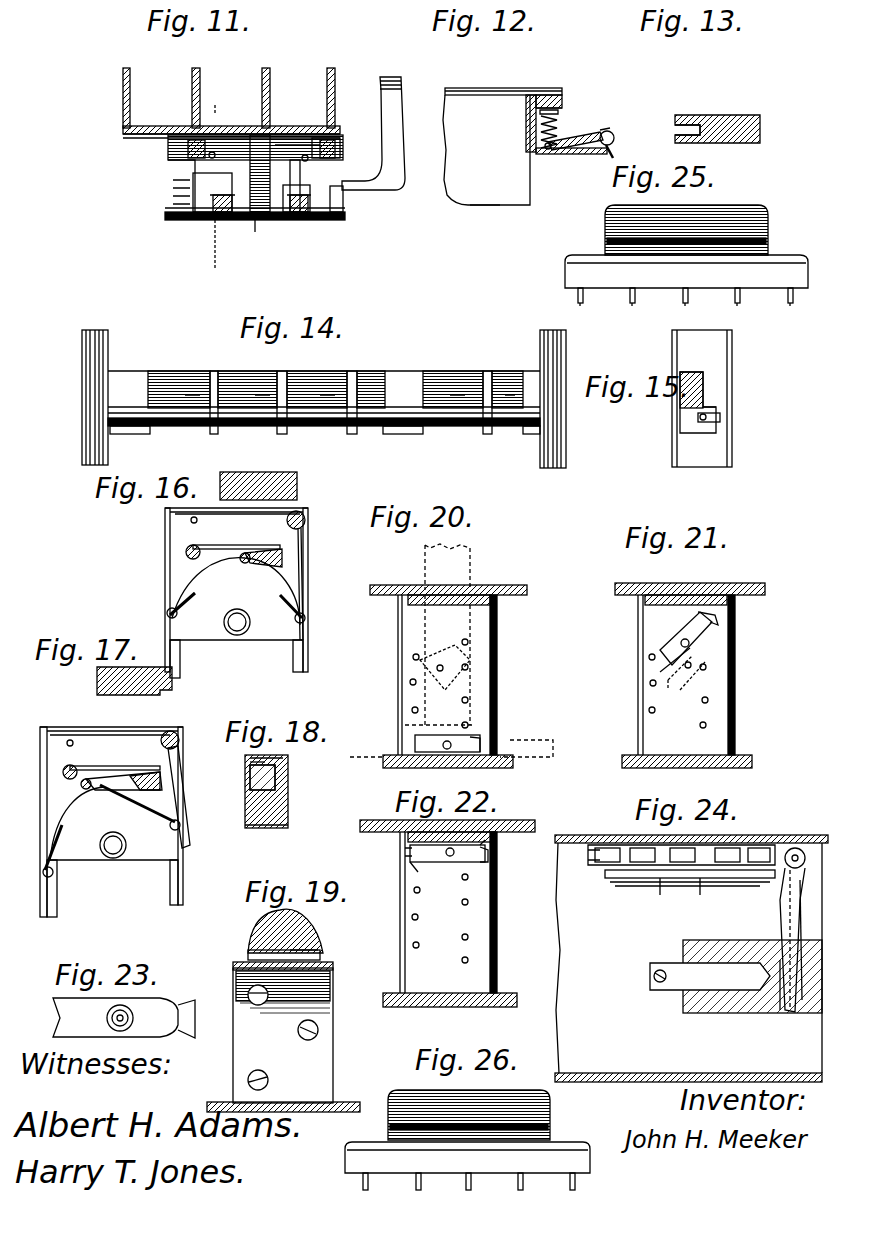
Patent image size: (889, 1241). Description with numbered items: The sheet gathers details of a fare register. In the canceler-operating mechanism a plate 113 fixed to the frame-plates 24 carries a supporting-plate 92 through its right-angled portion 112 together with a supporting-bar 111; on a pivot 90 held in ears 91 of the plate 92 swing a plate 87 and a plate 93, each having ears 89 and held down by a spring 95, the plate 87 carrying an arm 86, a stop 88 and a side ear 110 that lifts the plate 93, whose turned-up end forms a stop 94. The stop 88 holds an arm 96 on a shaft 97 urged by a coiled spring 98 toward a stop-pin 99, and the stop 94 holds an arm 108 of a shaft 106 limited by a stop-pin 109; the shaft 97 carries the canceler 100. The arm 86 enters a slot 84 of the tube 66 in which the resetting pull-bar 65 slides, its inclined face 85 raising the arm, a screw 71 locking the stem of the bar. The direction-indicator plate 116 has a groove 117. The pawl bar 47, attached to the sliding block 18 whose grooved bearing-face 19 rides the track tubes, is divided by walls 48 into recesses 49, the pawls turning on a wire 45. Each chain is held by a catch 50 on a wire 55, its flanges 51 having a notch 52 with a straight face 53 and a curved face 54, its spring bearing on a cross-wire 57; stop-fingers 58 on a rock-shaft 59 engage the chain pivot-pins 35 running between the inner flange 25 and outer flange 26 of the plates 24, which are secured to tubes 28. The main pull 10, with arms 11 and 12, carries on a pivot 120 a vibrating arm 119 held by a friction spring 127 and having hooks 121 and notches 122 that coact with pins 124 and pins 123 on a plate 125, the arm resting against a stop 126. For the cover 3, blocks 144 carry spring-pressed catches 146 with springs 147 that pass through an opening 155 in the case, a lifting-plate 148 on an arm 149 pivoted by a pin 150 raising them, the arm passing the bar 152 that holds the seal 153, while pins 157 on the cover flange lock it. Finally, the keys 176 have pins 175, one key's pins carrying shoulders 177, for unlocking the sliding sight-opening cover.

In FIG. 24, the cover 3 is at (745, 835).
In FIG. 16, the main pull 10 is at (255, 476).
In FIG. 17, the main pull 10 is at (97, 680).
In FIG. 20, the main pull 10 is at (540, 746).
In FIG. 20, the arm 11 is at (490, 592).
In FIG. 21, the arm 11 is at (708, 590).
In FIG. 22, the arm 11 is at (497, 846).
In FIG. 11, the arm 12 is at (215, 193).
In FIG. 14, the sliding block 18 is at (323, 383).
In FIG. 15, the sliding block 18 is at (732, 350).
In FIG. 14, the bearing-face 19 is at (108, 350).
In FIG. 11, the plate 24 is at (229, 98).
In FIG. 12, the plate 24 is at (486, 159).
In FIG. 16, the plate 24 is at (237, 517).
In FIG. 18, the plate 24 is at (110, 737).
In FIG. 16, the inner flange 25 is at (180, 666).
In FIG. 18, the inner flange 25 is at (100, 796).
In FIG. 12, the outer flange 26 is at (445, 92).
In FIG. 16, the outer flange 26 is at (165, 590).
In FIG. 18, the outer flange 26 is at (183, 768).
In FIG. 16, the tube 28 is at (237, 622).
In FIG. 18, the tube 28 is at (126, 845).
In FIG. 16, the pivot-pin 35 is at (245, 564).
In FIG. 18, the pivot-pin 35 is at (80, 784).
In FIG. 14, the pivot 45 is at (345, 426).
In FIG. 15, the pivot 45 is at (702, 420).
In FIG. 14, the bar 47 is at (345, 372).
In FIG. 15, the bar 47 is at (690, 385).
In FIG. 14, the division-wall 48 is at (150, 372).
In FIG. 15, the division-wall 48 is at (690, 418).
In FIG. 14, the recess 49 is at (188, 396).
In FIG. 15, the recess 49 is at (708, 392).
In FIG. 16, the catch 50 is at (236, 538).
In FIG. 18, the catch 50 is at (105, 766).
In FIG. 16, the flange 51 is at (265, 558).
In FIG. 18, the flange 51 is at (124, 781).
In FIG. 16, the notch 52 is at (248, 554).
In FIG. 18, the notch 52 is at (105, 780).
In FIG. 16, the straight face 53 is at (328, 540).
In FIG. 18, the straight face 53 is at (162, 762).
In FIG. 16, the curved face 54 is at (210, 562).
In FIG. 18, the curved face 54 is at (100, 782).
In FIG. 18, the wire 55 is at (60, 751).
In FIG. 16, the cross-wire 57 is at (194, 517).
In FIG. 16, the stop-finger 58 is at (303, 575).
In FIG. 18, the stop-finger 58 is at (180, 792).
In FIG. 16, the rock-shaft 59 is at (306, 518).
In FIG. 18, the rock-shaft 59 is at (178, 735).
In FIG. 18, the pull-bar 65 is at (288, 820).
In FIG. 18, the shell 66 is at (288, 794).
In FIG. 18, the screw 71 is at (250, 780).
In FIG. 18, the slot 84 is at (275, 756).
In FIG. 18, the inclined face 85 is at (250, 762).
In FIG. 11, the arm 86 is at (373, 133).
In FIG. 11, the plate 87 is at (300, 185).
In FIG. 12, the plate 87 is at (608, 132).
In FIG. 11, the stop 88 is at (290, 165).
In FIG. 12, the stop 88 is at (548, 150).
In FIG. 11, the ear 89 is at (220, 212).
In FIG. 11, the pivot 90 is at (320, 220).
In FIG. 12, the pivot 90 is at (614, 138).
In FIG. 11, the ear 91 is at (185, 220).
In FIG. 11, the supporting-plate 92 is at (345, 206).
In FIG. 12, the supporting-plate 92 is at (571, 160).
In FIG. 11, the plate 93 is at (212, 192).
In FIG. 11, the stop 94 is at (250, 160).
In FIG. 11, the spring 95 is at (222, 212).
In FIG. 12, the spring 95 is at (614, 156).
In FIG. 11, the arm 96 is at (282, 138).
In FIG. 12, the arm 96 is at (575, 138).
In FIG. 11, the shaft 97 is at (342, 142).
In FIG. 12, the shaft 97 is at (560, 112).
In FIG. 12, the coiled spring 98 is at (560, 132).
In FIG. 11, the stop-pin 99 is at (308, 160).
In FIG. 12, the canceler 100 is at (503, 83).
In FIG. 11, the shaft 106 is at (210, 156).
In FIG. 11, the arm 108 is at (240, 135).
In FIG. 11, the stop-pin 109 is at (213, 160).
In FIG. 11, the ear 110 is at (268, 222).
In FIG. 12, the supporting-bar 111 is at (562, 100).
In FIG. 11, the portion 112 is at (135, 138).
In FIG. 12, the portion 112 is at (562, 104).
In FIG. 11, the plate 113 is at (165, 126).
In FIG. 12, the plate 113 is at (527, 145).
In FIG. 13, the plate 116 is at (717, 119).
In FIG. 13, the groove 117 is at (676, 126).
In FIG. 19, the vibrating arm 119 is at (248, 955).
In FIG. 23, the vibrating arm 119 is at (101, 1018).
In FIG. 20, the vibrating arm 119 is at (413, 710).
In FIG. 21, the vibrating arm 119 is at (660, 654).
In FIG. 22, the vibrating arm 119 is at (447, 859).
In FIG. 20, the pivot 120 is at (452, 742).
In FIG. 21, the pivot 120 is at (683, 640).
In FIG. 22, the pivot 120 is at (455, 850).
In FIG. 19, the hook 121 is at (320, 952).
In FIG. 23, the hook 121 is at (180, 1000).
In FIG. 20, the hook 121 is at (482, 745).
In FIG. 21, the hook 121 is at (718, 620).
In FIG. 22, the hook 121 is at (490, 858).
In FIG. 23, the notch 122 is at (53, 1014).
In FIG. 20, the notch 122 is at (415, 742).
In FIG. 21, the notch 122 is at (660, 672).
In FIG. 22, the notch 122 is at (410, 858).
In FIG. 20, the pin 123 is at (410, 682).
In FIG. 21, the pin 123 is at (649, 658).
In FIG. 22, the pin 123 is at (420, 945).
In FIG. 20, the locking-pin 124 is at (468, 669).
In FIG. 21, the locking-pin 124 is at (706, 725).
In FIG. 22, the locking-pin 124 is at (468, 902).
In FIG. 19, the plate 125 is at (333, 965).
In FIG. 20, the plate 125 is at (447, 675).
In FIG. 21, the plate 125 is at (686, 675).
In FIG. 22, the plate 125 is at (400, 958).
In FIG. 20, the stop 126 is at (448, 770).
In FIG. 21, the stop 126 is at (687, 771).
In FIG. 22, the stop 126 is at (441, 905).
In FIG. 19, the spring 127 is at (248, 940).
In FIG. 24, the block 144 is at (600, 836).
In FIG. 24, the catch 146 is at (690, 870).
In FIG. 24, the spring 147 is at (635, 848).
In FIG. 24, the lifting-plate 148 is at (640, 870).
In FIG. 24, the arm 149 is at (790, 910).
In FIG. 24, the pin 150 is at (793, 930).
In FIG. 24, the bar 152 is at (710, 976).
In FIG. 24, the seal 153 is at (725, 1005).
In FIG. 24, the opening 155 is at (575, 872).
In FIG. 24, the pin 157 is at (780, 1012).
In FIG. 25, the pin 175 is at (628, 306).
In FIG. 26, the pin 175 is at (370, 1186).
In FIG. 25, the key 176 is at (686, 246).
In FIG. 26, the key 176 is at (467, 1131).
In FIG. 25, the shoulder 177 is at (808, 296).